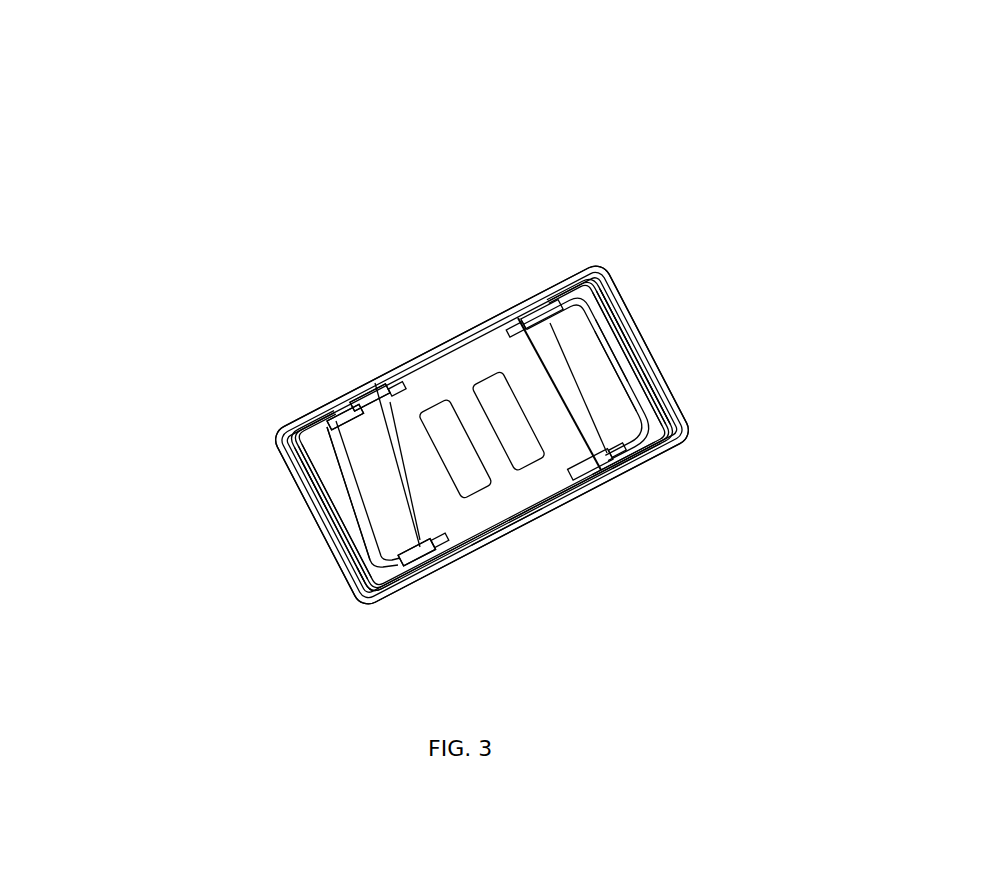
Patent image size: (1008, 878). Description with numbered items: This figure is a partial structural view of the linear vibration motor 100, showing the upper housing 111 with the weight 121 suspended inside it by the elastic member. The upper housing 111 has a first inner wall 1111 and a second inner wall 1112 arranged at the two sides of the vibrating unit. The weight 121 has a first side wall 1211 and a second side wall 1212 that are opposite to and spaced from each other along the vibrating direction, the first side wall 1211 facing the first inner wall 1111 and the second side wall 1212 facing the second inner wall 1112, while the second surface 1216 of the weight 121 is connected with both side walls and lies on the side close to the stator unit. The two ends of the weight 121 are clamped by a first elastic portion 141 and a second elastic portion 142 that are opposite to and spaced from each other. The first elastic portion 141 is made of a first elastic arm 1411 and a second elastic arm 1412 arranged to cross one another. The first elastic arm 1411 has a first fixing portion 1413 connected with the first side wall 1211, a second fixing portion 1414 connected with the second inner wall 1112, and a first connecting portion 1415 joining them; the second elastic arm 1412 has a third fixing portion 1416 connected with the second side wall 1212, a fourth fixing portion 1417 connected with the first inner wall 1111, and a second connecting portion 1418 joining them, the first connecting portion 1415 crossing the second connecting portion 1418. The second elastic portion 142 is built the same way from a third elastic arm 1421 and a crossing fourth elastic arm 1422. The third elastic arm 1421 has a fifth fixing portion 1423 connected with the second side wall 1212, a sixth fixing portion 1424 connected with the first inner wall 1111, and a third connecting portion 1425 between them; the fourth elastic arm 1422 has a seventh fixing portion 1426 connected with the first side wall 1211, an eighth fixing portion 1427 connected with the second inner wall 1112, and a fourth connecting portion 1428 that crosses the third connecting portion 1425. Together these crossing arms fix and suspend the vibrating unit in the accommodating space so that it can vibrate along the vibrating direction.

The linear vibration motor 100 is at (466, 40).
The upper housing 111 is at (445, 330).
The first inner wall 1111 is at (416, 390).
The second inner wall 1112 is at (507, 530).
The weight 121 is at (545, 526).
The first side wall 1211 is at (519, 305).
The second side wall 1212 is at (468, 560).
The second surface 1216 is at (405, 387).
The first elastic portion 141 is at (833, 330).
The first elastic arm 1411 is at (765, 468).
The second elastic arm 1412 is at (767, 298).
The first fixing portion 1413 is at (628, 468).
The second fixing portion 1414 is at (648, 462).
The first connecting portion 1415 is at (665, 445).
The third fixing portion 1416 is at (624, 416).
The fourth fixing portion 1417 is at (605, 300).
The second connecting portion 1418 is at (618, 372).
The second elastic portion 142 is at (111, 377).
The third elastic arm 1421 is at (178, 308).
The fourth elastic arm 1422 is at (178, 570).
The fifth fixing portion 1423 is at (370, 400).
The sixth fixing portion 1424 is at (335, 412).
The third connecting portion 1425 is at (322, 488).
The seventh fixing portion 1426 is at (358, 540).
The eighth fixing portion 1427 is at (372, 603).
The fourth connecting portion 1428 is at (378, 590).